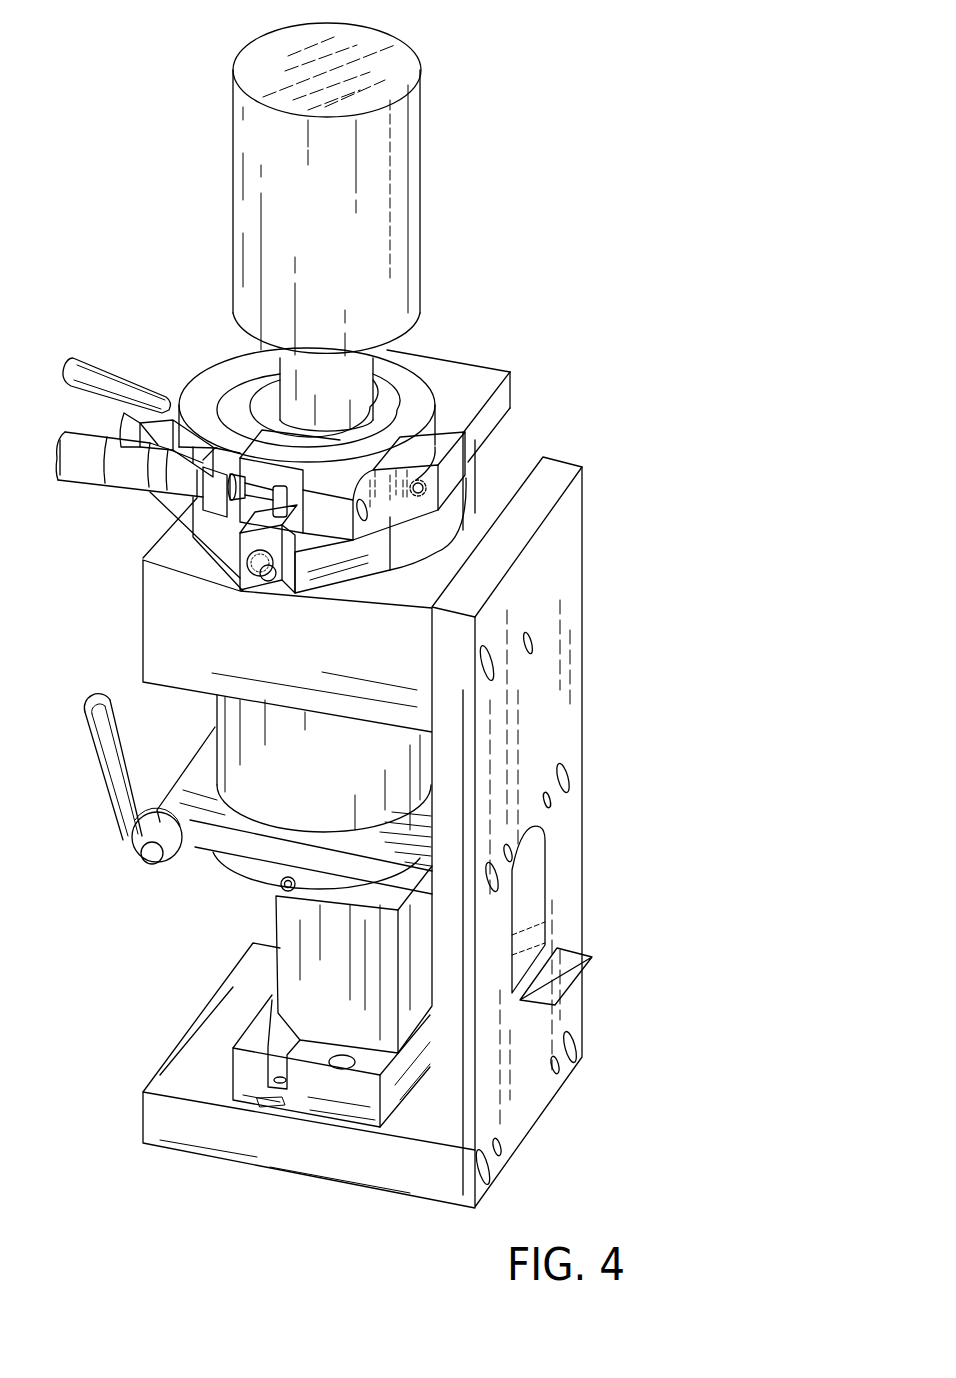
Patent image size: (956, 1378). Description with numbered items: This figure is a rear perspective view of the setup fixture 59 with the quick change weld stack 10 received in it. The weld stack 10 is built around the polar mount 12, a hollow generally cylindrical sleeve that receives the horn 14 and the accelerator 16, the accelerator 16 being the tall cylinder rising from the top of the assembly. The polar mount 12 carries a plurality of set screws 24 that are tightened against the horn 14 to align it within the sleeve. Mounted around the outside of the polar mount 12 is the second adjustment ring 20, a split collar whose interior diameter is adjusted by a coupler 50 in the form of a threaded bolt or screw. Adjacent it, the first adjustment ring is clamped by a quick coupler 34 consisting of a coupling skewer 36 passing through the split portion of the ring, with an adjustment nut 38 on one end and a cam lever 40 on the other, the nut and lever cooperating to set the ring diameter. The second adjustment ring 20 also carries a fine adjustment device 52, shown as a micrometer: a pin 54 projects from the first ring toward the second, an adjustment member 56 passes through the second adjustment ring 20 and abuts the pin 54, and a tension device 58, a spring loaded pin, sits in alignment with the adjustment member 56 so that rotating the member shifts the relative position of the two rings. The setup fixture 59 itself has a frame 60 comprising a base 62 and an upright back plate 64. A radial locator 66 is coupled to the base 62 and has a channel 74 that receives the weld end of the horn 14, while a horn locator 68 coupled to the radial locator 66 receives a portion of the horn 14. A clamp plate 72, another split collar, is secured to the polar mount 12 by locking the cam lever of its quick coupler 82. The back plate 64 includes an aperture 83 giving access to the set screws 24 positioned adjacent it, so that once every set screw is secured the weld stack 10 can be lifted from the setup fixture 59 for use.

The quick change weld stack 10 is at (128, 93).
The polar mount 12 is at (237, 735).
The horn 14 is at (275, 927).
The accelerator 16 is at (415, 108).
The second adjustment ring 20 is at (513, 368).
The set screws 24 is at (270, 905).
The coupler 34 is at (110, 419).
The coupling skewer 36 is at (272, 583).
The adjustment nut 38 is at (245, 558).
The cam lever 40 is at (76, 360).
The coupler 50 is at (418, 497).
The fine adjustment device 52 is at (48, 478).
The pin 54 is at (273, 510).
The adjustment member 56 is at (98, 482).
The tension device 58 is at (298, 478).
The setup fixture 59 is at (640, 634).
The frame 60 is at (584, 462).
The base 62 is at (152, 1143).
The back plate 64 is at (582, 745).
The radial locator 66 is at (330, 1110).
The horn locator 68 is at (287, 970).
The clamp plate 72 is at (200, 847).
The channel 74 is at (265, 1105).
The coupler 82 is at (146, 872).
The aperture 83 is at (582, 983).